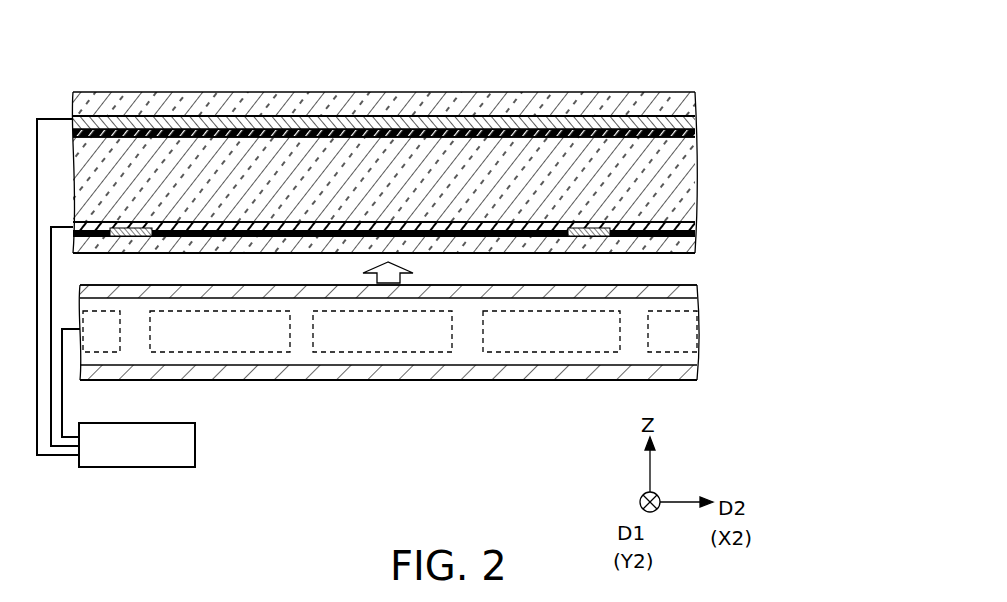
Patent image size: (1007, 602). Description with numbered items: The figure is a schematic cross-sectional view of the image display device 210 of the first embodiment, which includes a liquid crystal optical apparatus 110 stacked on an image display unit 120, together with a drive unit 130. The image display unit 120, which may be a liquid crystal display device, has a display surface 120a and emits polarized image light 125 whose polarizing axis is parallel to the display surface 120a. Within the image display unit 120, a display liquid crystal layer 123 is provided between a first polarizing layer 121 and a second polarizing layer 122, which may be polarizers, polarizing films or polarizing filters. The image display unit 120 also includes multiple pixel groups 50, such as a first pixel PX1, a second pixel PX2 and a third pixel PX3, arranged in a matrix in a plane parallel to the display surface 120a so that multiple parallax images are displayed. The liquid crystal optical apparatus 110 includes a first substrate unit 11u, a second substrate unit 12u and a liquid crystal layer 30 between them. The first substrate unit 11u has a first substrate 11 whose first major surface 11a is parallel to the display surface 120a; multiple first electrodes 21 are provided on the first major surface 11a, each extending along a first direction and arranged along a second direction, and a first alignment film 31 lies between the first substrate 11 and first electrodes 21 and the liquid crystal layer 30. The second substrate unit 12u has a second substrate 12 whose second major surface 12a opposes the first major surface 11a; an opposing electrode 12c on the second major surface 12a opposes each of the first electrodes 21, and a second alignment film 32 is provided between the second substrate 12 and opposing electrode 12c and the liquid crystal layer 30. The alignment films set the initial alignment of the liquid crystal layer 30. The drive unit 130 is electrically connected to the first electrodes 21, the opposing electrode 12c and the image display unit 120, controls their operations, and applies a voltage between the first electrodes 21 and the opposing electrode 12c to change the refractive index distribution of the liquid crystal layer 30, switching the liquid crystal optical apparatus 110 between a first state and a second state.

The image display device 210 is at (447, 243).
The liquid crystal optical apparatus 110 is at (465, 176).
The second substrate unit 12u is at (439, 121).
The second substrate 12 is at (665, 106).
The opposing electrode 12c is at (668, 124).
The second alignment film 32 is at (665, 139).
The second major surface 12a is at (640, 120).
The liquid crystal layer 30 is at (665, 176).
The first major surface 11a is at (575, 226).
The first substrate unit 11u is at (439, 231).
The first electrodes 21 is at (620, 226).
The first alignment film 31 is at (660, 234).
The first substrate 11 is at (660, 246).
The image display unit 120 is at (441, 365).
The display surface 120a is at (640, 286).
The first polarizing layer 121 is at (675, 293).
The display liquid crystal layer 123 is at (415, 389).
The second polarizing layer 122 is at (414, 375).
The image light 125 is at (413, 277).
The drive unit 130 is at (195, 445).
The first pixel PX1 is at (235, 354).
The second pixel PX2 is at (393, 354).
The third pixel PX3 is at (548, 354).
The pixel groups 50 is at (560, 432).